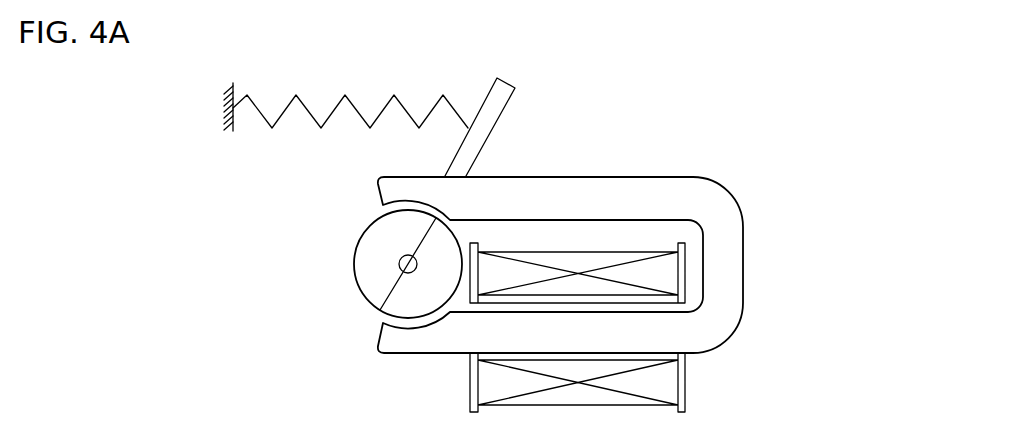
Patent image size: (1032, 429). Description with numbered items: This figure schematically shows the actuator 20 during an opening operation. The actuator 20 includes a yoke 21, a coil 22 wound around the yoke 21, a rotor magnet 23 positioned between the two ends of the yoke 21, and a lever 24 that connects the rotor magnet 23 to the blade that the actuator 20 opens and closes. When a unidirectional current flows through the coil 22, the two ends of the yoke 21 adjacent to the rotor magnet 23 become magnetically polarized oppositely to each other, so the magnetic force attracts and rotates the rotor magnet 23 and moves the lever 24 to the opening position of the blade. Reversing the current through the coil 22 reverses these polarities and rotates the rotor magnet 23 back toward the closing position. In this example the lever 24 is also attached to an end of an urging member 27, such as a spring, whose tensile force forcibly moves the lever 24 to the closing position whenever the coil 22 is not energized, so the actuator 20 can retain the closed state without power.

The actuator 20 is at (800, 207).
The yoke 21 is at (745, 265).
The coil 22 is at (587, 250).
The rotor magnet 23 is at (356, 262).
The lever 24 is at (515, 88).
The urging member 27 is at (345, 95).